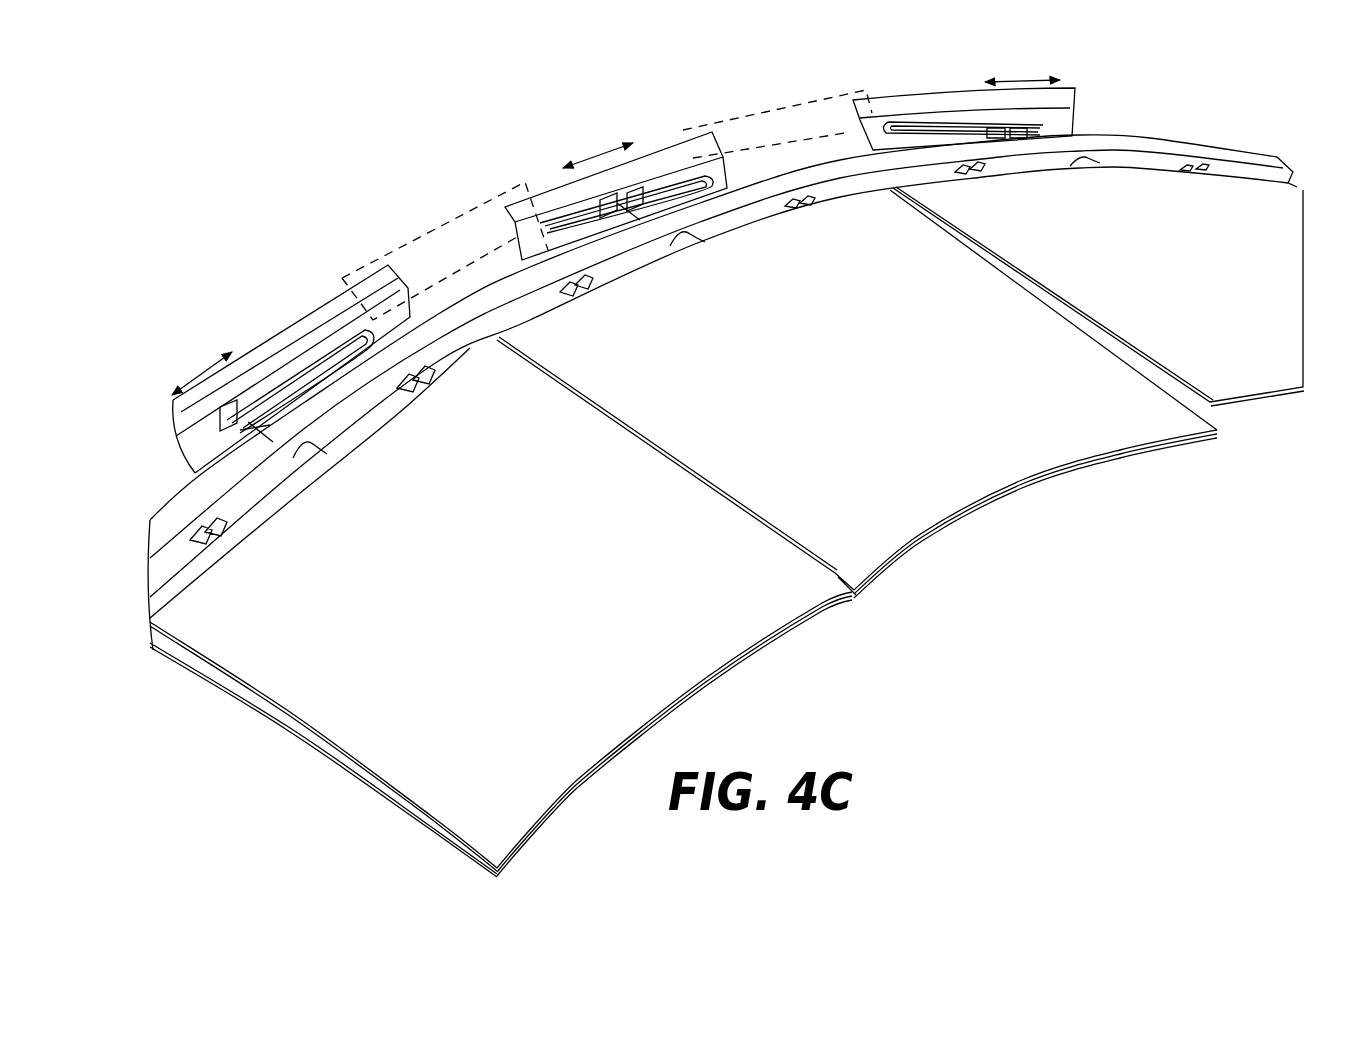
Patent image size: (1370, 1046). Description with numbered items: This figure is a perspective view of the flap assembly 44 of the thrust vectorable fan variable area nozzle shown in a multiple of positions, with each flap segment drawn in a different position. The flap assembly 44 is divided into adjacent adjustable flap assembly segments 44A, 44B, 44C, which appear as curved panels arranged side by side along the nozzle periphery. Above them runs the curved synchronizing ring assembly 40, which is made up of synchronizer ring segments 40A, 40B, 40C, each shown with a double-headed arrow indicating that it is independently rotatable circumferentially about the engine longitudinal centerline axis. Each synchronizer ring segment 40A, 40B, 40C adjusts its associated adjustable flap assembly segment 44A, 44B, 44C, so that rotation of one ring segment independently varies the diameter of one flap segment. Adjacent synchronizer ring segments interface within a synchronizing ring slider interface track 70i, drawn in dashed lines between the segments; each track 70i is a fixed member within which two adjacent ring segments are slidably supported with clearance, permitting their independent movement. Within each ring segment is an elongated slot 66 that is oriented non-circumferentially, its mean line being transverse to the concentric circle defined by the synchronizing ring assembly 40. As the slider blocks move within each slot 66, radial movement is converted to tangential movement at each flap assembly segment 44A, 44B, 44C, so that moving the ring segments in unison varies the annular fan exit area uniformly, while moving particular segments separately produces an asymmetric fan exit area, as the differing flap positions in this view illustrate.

The synchronizing ring assembly 40 is at (602, 130).
The synchronizer ring segment 40A is at (243, 365).
The synchronizer ring segment 40B is at (555, 193).
The synchronizer ring segment 40C is at (1075, 97).
The slot 66 is at (337, 333).
The synchronizing ring slider interface track 70i is at (437, 242).
The flap assembly 44 is at (727, 532).
The adjustable flap assembly segment 44A is at (760, 672).
The adjustable flap assembly segment 44B is at (992, 520).
The adjustable flap assembly segment 44C is at (1262, 408).